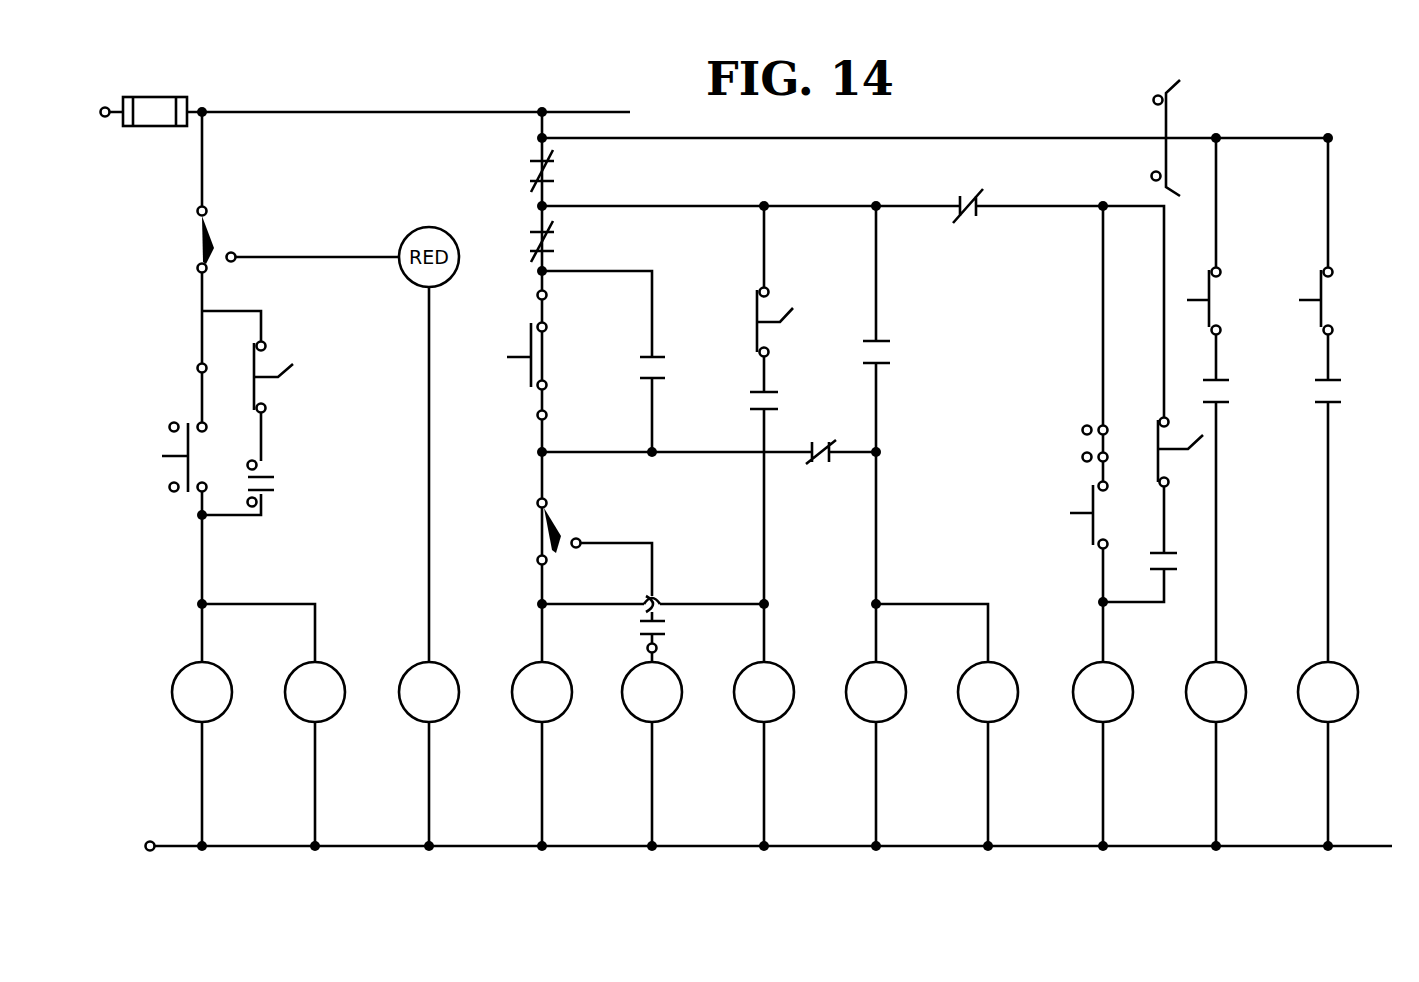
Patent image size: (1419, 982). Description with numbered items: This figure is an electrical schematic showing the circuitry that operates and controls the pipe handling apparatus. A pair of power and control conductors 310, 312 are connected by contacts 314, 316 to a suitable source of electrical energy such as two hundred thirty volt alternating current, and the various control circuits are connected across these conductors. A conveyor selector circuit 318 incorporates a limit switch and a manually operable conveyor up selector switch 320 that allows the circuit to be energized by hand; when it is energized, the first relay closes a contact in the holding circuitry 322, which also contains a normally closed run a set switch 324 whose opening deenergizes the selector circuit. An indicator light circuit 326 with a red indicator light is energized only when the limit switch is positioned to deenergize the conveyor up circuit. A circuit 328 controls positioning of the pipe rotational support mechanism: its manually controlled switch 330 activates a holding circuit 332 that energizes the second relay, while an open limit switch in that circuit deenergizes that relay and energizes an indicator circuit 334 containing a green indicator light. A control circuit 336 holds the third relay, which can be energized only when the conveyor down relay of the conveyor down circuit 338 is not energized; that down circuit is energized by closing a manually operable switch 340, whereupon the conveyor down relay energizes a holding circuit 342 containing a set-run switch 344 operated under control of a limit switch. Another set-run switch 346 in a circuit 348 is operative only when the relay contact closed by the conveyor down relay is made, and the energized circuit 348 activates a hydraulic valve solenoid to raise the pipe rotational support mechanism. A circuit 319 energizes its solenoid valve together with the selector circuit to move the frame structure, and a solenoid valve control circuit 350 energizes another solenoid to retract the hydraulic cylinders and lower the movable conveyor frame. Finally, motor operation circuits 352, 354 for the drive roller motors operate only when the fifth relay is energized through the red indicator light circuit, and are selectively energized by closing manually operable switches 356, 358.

The power and control conductor 310 is at (343, 112).
The power and control conductor 312 is at (226, 846).
The contact 314 is at (105, 108).
The contact 316 is at (150, 840).
The conveyor selector circuit 318 is at (204, 735).
The circuit 319 is at (315, 775).
The conveyor up selector switch 320 is at (185, 462).
The holding circuitry 322 is at (240, 518).
The run a set switch 324 is at (270, 377).
The indicator light circuit 326 is at (429, 773).
The circuit 328 is at (540, 126).
The manually controlled switch 330 is at (530, 345).
The holding circuit 332 is at (542, 754).
The indicator circuit 334 is at (652, 782).
The control circuit 336 is at (876, 770).
The conveyor down circuit 338 is at (1103, 770).
The manually operable switch 340 is at (1090, 524).
The holding circuit 342 is at (1140, 605).
The set-run switch 344 is at (1165, 452).
The set-run switch 346 is at (770, 318).
The circuit 348 is at (766, 548).
The solenoid valve control circuit 350 is at (988, 770).
The motor operation circuit 352 is at (1217, 184).
The motor operation circuit 354 is at (1329, 184).
The manually operable switch 356 is at (1209, 305).
The manually operable switch 358 is at (1320, 305).